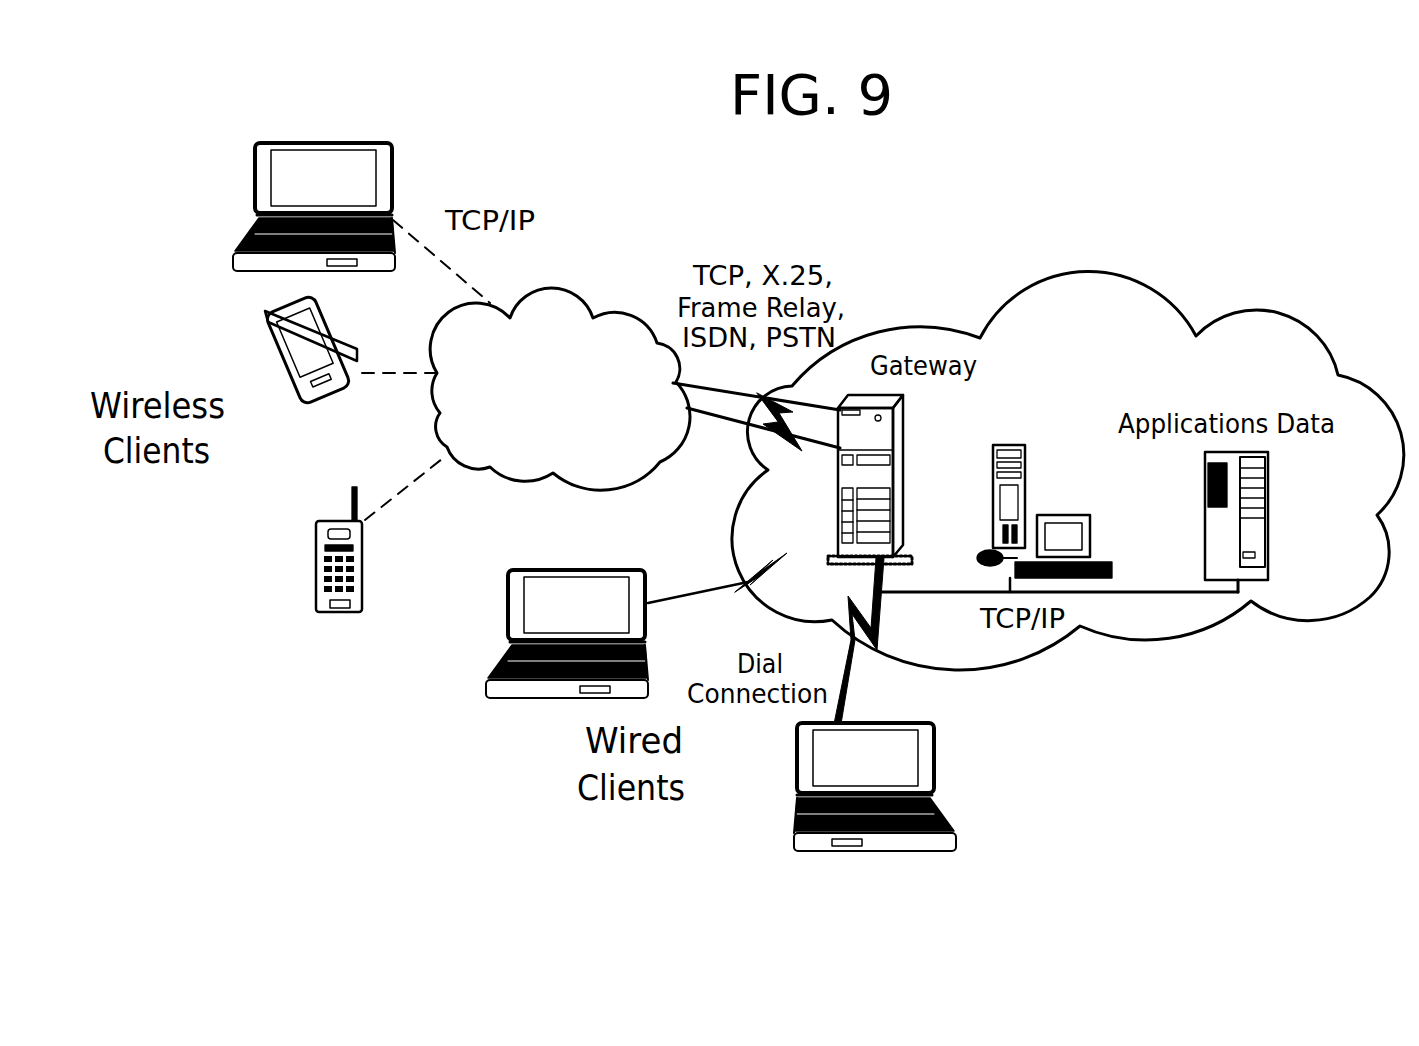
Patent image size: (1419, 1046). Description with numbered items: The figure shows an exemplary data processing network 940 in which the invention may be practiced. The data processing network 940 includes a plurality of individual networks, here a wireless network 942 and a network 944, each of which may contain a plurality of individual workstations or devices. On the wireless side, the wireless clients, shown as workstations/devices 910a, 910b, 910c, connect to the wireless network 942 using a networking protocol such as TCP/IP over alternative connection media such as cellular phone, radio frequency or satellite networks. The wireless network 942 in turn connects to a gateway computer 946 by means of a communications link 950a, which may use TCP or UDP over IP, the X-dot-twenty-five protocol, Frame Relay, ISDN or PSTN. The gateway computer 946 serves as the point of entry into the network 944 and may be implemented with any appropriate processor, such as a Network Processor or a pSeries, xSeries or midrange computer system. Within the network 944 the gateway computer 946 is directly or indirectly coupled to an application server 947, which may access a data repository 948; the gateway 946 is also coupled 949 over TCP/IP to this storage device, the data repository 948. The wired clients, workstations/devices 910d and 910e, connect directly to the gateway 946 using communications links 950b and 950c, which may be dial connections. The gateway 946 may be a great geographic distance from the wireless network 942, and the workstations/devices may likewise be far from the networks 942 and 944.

The workstation/device 910a is at (420, 140).
The workstation/device 910b is at (316, 410).
The workstation/device 910c is at (363, 592).
The workstation/device 910d is at (618, 570).
The workstation/device 910e is at (797, 805).
The wireless network 942 is at (551, 292).
The network 944 is at (1080, 278).
The gateway computer 946 is at (902, 458).
The application server 947 is at (1025, 463).
The data repository 948 is at (1268, 496).
The coupling 949 is at (1118, 594).
The communications link 950a is at (722, 425).
The communications link 950b is at (693, 593).
The communications link 950c is at (850, 660).
The data processing network 940 is at (1262, 803).